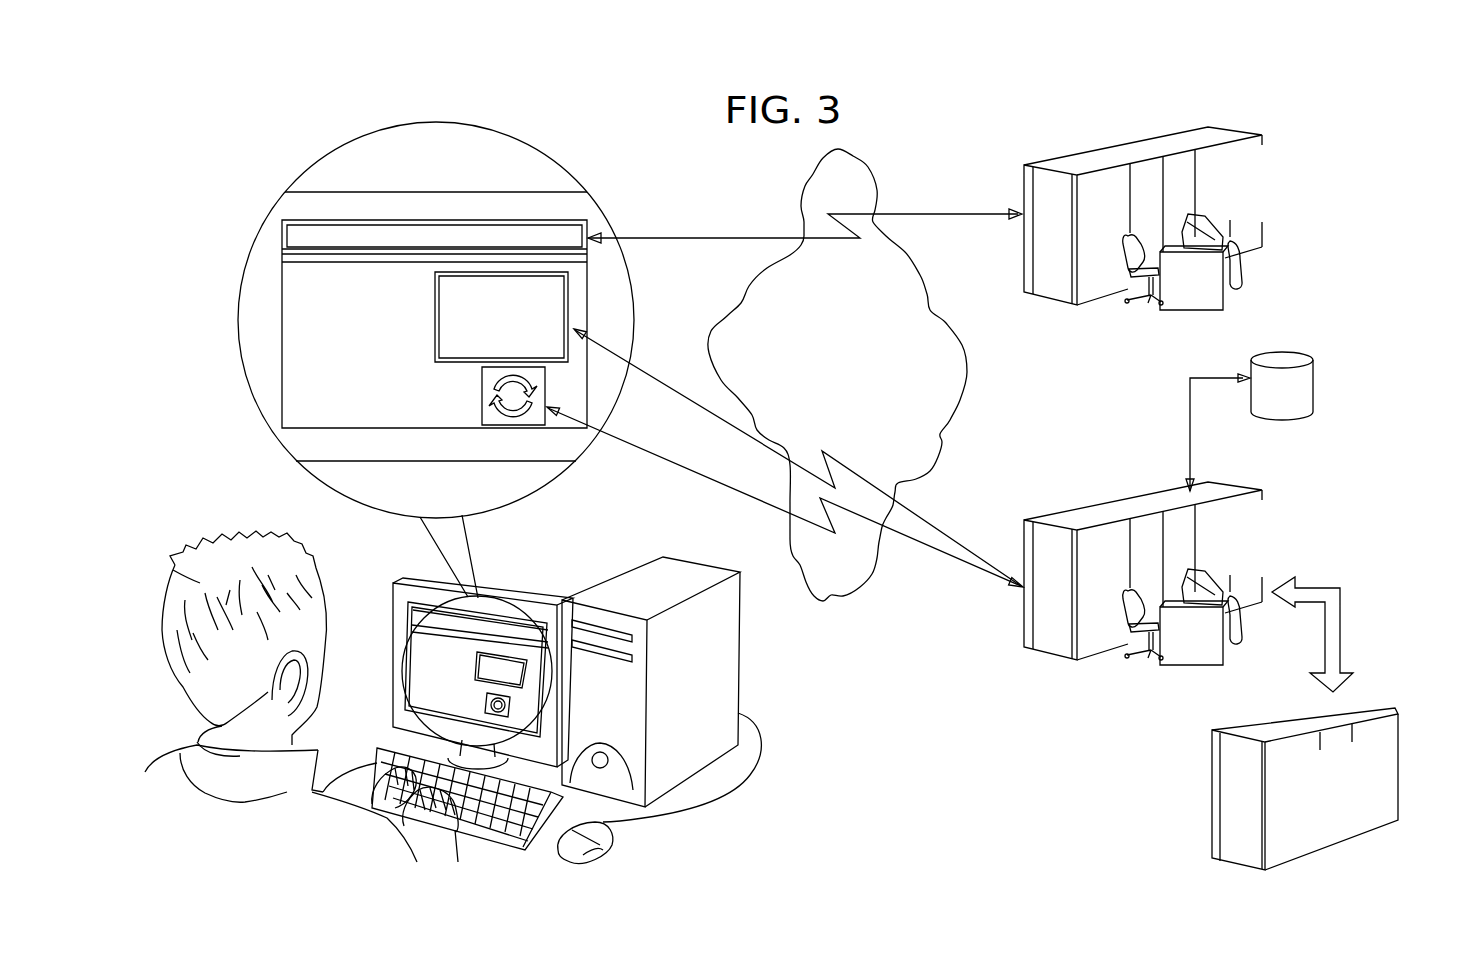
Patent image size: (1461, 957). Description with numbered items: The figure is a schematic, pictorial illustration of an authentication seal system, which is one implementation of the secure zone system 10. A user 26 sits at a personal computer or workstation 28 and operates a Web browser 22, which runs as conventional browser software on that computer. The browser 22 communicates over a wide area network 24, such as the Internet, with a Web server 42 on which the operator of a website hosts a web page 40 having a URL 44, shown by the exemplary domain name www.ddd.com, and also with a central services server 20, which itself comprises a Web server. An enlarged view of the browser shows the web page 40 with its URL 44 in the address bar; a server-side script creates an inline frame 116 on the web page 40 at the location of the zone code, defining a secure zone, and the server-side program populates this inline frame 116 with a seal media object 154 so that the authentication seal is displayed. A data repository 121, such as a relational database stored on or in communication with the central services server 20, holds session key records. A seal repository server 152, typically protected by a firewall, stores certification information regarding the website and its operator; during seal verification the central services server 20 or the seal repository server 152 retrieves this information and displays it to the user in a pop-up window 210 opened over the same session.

The secure zone system 10 is at (1347, 517).
The central services server 20 is at (1095, 507).
The Web browser 22 is at (280, 274).
The wide area network (WAN) 24 is at (801, 220).
The user 26 is at (193, 562).
The personal computer or workstation 28 is at (612, 597).
The web page 40 is at (312, 405).
The Web server 42 is at (1097, 150).
The URL 44 is at (380, 230).
The inline frame 116 is at (545, 383).
The data repository 121 is at (1316, 383).
The seal repository server 152 is at (1260, 730).
The seal media object 154 is at (488, 409).
The pop-up window 210 is at (457, 363).